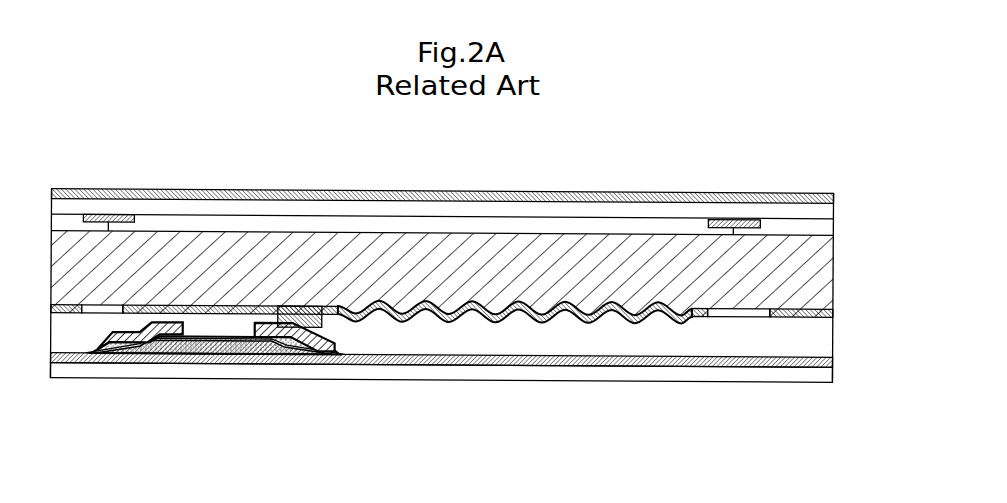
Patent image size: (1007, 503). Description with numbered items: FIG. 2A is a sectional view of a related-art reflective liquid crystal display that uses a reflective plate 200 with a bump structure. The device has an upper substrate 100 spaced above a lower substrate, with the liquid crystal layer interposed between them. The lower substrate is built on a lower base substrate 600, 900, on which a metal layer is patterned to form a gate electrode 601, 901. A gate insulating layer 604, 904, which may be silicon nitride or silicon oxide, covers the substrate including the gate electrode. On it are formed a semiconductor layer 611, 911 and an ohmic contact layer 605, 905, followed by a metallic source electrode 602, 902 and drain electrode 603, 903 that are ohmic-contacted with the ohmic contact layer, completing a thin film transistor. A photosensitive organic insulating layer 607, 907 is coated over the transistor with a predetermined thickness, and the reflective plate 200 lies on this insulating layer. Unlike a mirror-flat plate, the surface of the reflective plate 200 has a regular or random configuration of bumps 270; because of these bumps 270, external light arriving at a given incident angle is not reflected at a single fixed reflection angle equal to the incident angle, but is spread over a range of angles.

The upper substrate 100 is at (837, 197).
The reflective plate 200 is at (555, 297).
The bumps 270 is at (640, 300).
The lower base substrate 600 is at (441, 417).
The substrate 900 is at (522, 374).
The gate electrode 601 is at (442, 408).
The buffer layer 901 is at (226, 364).
The source electrode 602 is at (165, 237).
The source electrode 902 is at (127, 333).
The drain electrode 603 is at (362, 366).
The drain electrode 903 is at (336, 338).
The gate insulating layer 604 is at (244, 405).
The gate insulating layer 904 is at (318, 364).
The ohmic contact layer 605 is at (216, 384).
The semiconductor layer 905 is at (142, 348).
The organic insulating layer 607 is at (498, 331).
The passivation layer 907 is at (822, 338).
The semiconductor layer 611 is at (185, 391).
The gate electrode 911 is at (96, 356).